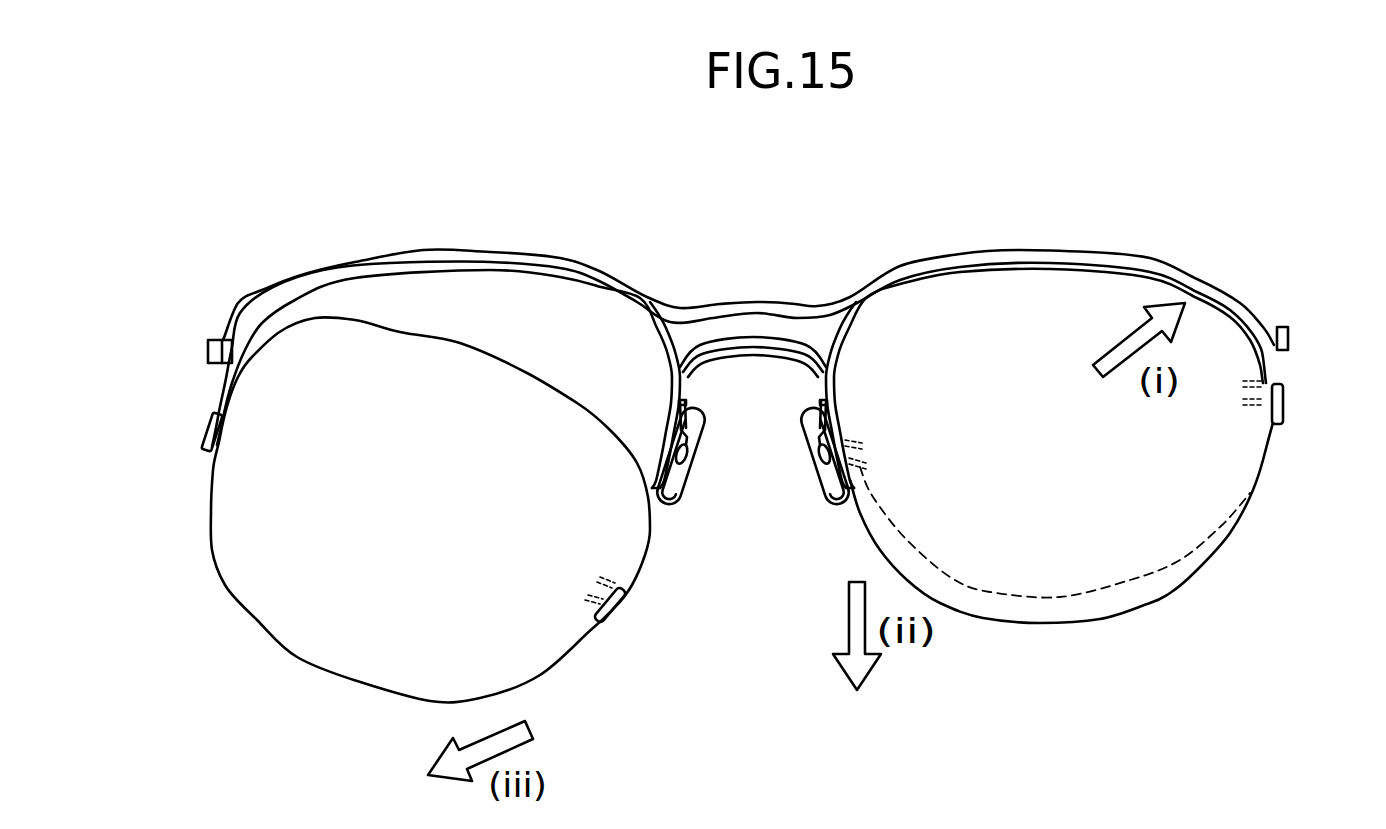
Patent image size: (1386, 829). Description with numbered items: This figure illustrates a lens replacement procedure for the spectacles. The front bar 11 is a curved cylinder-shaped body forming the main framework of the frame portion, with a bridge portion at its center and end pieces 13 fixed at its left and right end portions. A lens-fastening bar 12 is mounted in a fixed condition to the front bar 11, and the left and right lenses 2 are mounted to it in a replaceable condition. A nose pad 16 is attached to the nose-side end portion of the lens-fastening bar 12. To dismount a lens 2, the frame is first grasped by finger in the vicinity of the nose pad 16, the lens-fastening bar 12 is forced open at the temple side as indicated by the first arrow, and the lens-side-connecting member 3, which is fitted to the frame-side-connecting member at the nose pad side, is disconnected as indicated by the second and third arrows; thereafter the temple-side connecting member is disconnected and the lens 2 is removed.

The lens 2 is at (287, 640).
The lens-side-connecting member 3 is at (204, 420).
The front bar 11 is at (252, 298).
The lens-fastening bar 12 is at (227, 372).
The end piece 13 is at (208, 352).
The nose pad 16 is at (695, 467).